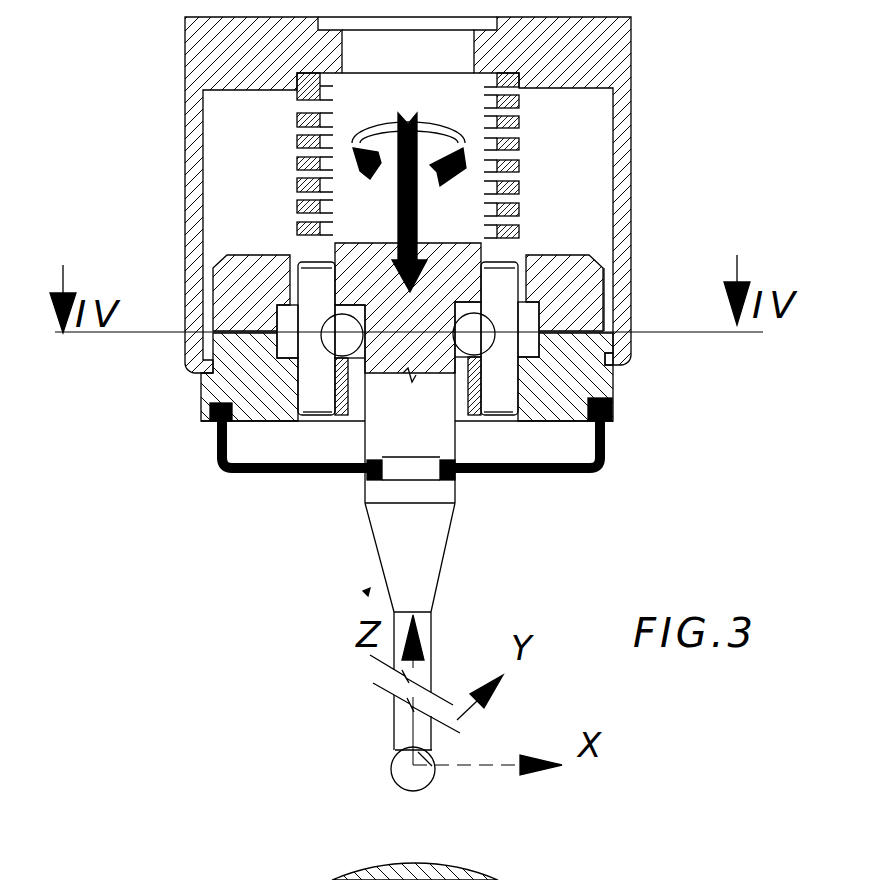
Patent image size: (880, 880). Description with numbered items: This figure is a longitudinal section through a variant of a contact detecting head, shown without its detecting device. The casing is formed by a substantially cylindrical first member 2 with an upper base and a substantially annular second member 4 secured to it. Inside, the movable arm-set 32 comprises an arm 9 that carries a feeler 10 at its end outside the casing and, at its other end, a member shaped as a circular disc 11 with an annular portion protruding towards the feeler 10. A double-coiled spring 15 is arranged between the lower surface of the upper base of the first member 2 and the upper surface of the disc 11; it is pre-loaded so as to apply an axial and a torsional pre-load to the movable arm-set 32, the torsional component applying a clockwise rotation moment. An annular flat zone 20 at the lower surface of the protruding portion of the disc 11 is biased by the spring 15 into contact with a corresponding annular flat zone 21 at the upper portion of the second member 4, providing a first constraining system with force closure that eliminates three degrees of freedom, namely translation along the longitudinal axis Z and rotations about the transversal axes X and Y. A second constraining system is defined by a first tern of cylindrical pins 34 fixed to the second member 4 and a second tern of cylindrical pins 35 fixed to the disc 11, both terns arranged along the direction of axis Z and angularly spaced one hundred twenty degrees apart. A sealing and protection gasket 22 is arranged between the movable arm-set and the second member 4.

The first member 2 is at (622, 178).
The second member 4 is at (580, 373).
The arm 9 is at (413, 588).
The feeler 10 is at (417, 773).
The circular disc 11 is at (577, 277).
The double-coiled spring 15 is at (520, 118).
The annular flat zone 20 is at (593, 320).
The annular flat zone 21 is at (560, 337).
The sealing and protection gasket 22 is at (330, 475).
The movable arm-set 32 is at (367, 591).
The cylindrical pins 34 is at (300, 417).
The cylindrical pins 35 is at (500, 387).